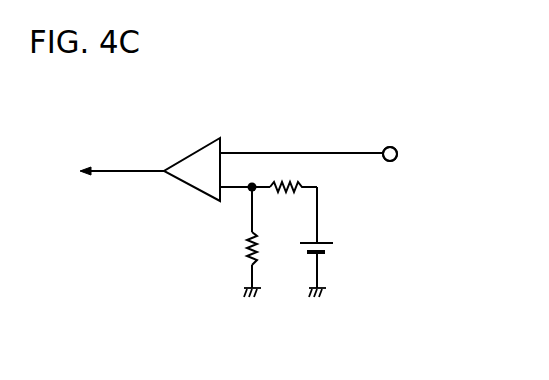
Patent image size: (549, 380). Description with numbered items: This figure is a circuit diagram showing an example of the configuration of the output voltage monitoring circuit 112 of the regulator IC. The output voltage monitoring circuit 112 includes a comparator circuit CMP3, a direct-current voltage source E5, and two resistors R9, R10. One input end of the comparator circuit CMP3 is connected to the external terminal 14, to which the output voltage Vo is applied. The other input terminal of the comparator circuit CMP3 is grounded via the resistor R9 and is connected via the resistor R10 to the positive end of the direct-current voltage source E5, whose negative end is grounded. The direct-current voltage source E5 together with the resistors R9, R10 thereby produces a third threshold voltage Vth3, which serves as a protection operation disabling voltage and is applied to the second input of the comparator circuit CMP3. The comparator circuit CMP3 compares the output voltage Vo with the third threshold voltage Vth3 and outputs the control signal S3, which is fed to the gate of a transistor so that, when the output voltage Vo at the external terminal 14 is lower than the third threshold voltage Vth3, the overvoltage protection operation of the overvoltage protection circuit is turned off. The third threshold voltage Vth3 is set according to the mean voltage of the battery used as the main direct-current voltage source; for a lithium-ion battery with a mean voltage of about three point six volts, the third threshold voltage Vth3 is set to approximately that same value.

The output voltage monitoring circuit 112 is at (124, 123).
The external terminal 14 is at (384, 148).
The comparator circuit CMP3 is at (197, 152).
The control signal S3 is at (122, 160).
The output voltage Vo is at (402, 145).
The third threshold voltage Vth3 is at (296, 175).
The resistor R10 is at (293, 201).
The resistor R9 is at (242, 242).
The direct-current voltage source E5 is at (304, 242).